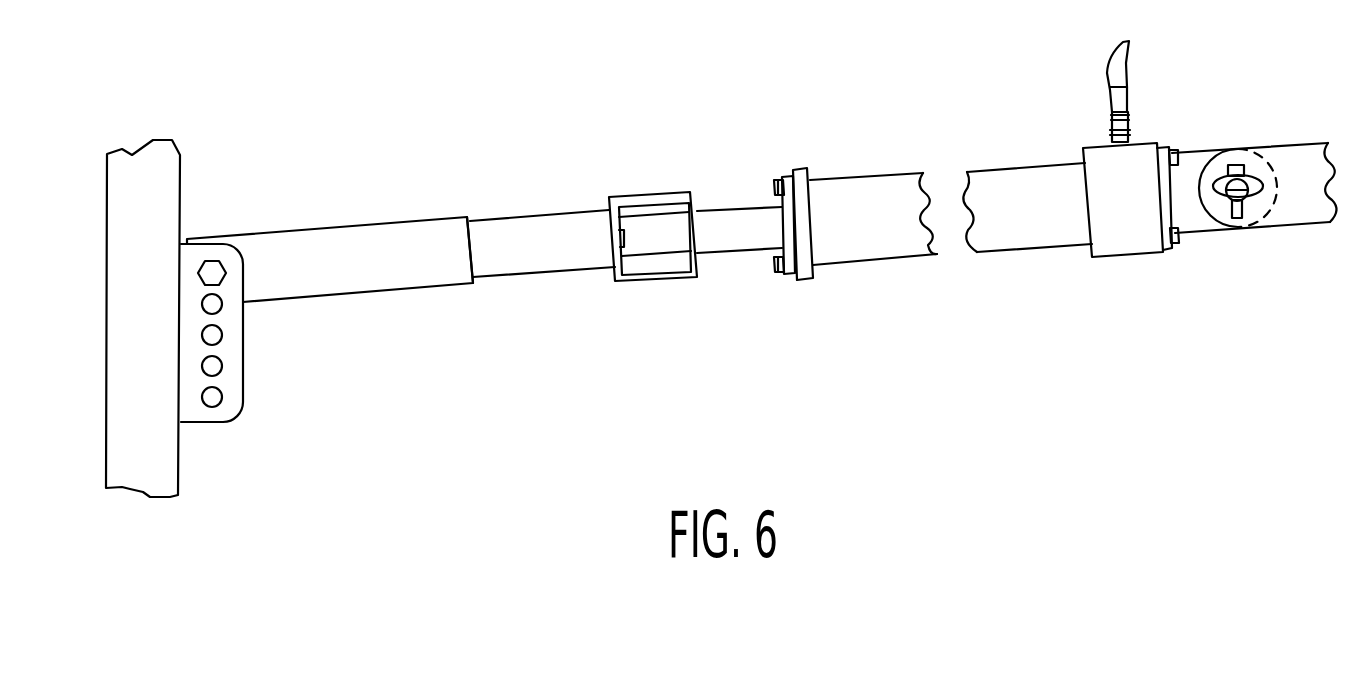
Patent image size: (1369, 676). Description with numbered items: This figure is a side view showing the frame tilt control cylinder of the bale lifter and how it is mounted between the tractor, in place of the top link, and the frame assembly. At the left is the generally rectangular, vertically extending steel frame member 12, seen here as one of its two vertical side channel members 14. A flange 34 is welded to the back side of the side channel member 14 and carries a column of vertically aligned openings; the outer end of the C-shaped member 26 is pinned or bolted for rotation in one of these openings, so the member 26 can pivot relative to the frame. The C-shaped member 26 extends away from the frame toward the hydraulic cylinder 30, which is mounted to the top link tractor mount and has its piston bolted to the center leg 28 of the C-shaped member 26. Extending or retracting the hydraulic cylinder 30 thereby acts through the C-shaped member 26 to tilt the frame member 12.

The frame member 12 is at (101, 374).
The side channel member 14 is at (141, 167).
The C-shaped member 26 is at (370, 214).
The center leg 28 is at (662, 192).
The hydraulic cylinder 30 is at (1172, 288).
The flange 34 is at (223, 423).